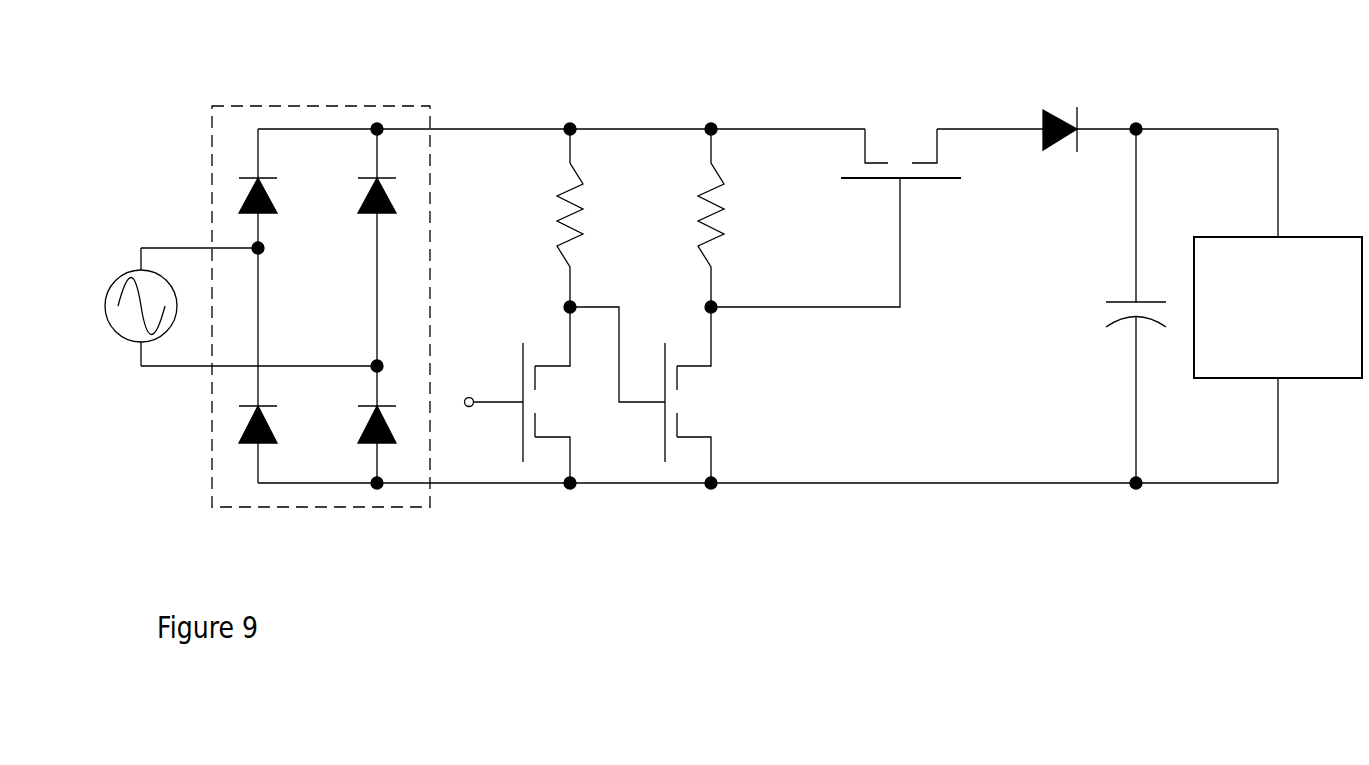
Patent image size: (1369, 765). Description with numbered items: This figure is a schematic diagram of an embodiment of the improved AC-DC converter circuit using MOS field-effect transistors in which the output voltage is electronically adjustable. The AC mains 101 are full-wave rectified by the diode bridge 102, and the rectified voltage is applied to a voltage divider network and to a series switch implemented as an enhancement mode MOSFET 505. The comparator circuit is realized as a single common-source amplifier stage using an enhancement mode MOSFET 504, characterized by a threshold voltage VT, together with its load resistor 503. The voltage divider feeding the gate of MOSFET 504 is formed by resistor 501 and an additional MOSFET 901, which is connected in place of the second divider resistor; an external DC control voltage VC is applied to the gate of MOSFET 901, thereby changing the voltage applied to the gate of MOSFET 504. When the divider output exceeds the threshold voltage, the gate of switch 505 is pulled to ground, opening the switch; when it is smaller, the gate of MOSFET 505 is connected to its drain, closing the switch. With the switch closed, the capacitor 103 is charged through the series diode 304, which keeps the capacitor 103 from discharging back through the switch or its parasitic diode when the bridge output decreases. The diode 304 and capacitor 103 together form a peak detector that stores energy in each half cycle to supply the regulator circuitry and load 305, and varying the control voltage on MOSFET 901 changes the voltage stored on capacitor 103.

The AC mains 101 is at (103, 290).
The diode bridge 102 is at (328, 105).
The capacitor 103 is at (1098, 305).
The series diode 304 is at (1057, 107).
The load 305 is at (1257, 230).
The resistor 501 is at (580, 225).
The load resistor 503 is at (730, 223).
The MOSFET 504 is at (713, 400).
The MOSFET 505 is at (958, 186).
The MOSFET 901 is at (507, 342).